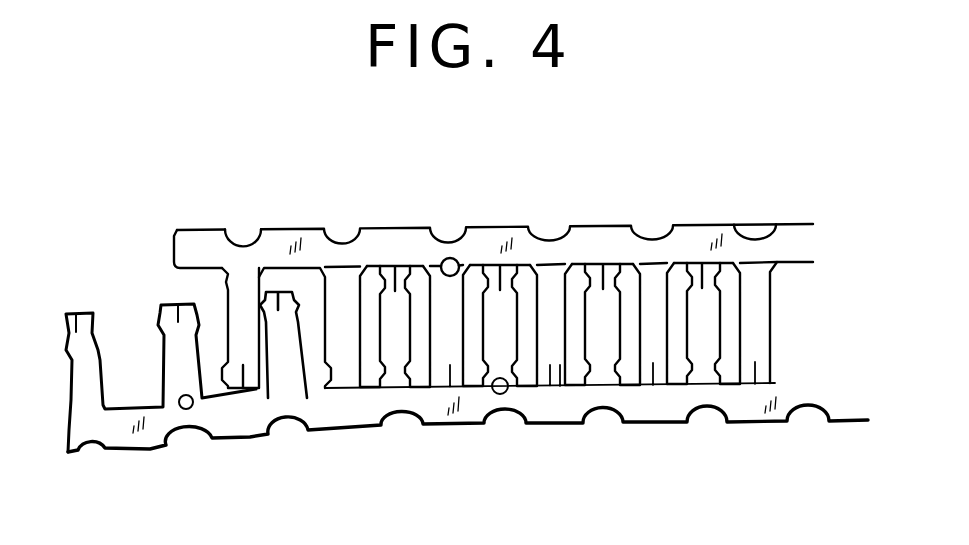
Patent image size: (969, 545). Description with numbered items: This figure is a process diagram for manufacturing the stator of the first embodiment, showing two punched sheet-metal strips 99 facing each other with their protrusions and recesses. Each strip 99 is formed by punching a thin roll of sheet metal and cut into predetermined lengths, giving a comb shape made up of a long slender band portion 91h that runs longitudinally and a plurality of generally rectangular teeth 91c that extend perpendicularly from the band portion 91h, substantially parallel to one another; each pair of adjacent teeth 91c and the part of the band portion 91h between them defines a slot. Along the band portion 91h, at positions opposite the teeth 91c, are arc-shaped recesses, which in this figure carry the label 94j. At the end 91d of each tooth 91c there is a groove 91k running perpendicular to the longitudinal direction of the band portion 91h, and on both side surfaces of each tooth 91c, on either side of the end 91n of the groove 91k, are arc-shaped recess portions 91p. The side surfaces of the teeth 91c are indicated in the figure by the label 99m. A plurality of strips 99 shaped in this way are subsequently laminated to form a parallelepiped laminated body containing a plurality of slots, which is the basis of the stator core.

The strip 99 is at (305, 240).
The positioning notch 94j is at (242, 240).
The band portion 91h is at (488, 243).
The teeth 91c is at (552, 297).
The groove 91k is at (247, 390).
The end of the tooth 91d is at (252, 393).
The arc-shaped recess portion 91p is at (328, 370).
The end of the groove 91n is at (363, 330).
The second carrier strip 99m is at (347, 367).